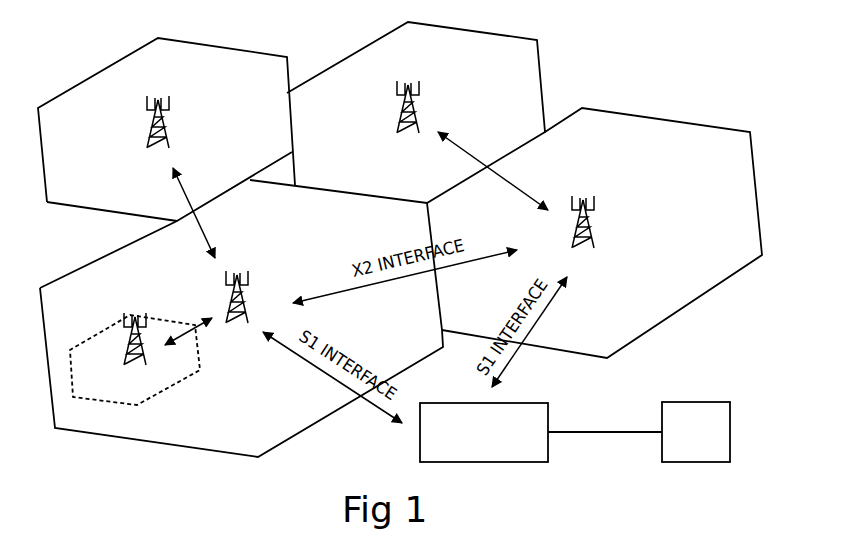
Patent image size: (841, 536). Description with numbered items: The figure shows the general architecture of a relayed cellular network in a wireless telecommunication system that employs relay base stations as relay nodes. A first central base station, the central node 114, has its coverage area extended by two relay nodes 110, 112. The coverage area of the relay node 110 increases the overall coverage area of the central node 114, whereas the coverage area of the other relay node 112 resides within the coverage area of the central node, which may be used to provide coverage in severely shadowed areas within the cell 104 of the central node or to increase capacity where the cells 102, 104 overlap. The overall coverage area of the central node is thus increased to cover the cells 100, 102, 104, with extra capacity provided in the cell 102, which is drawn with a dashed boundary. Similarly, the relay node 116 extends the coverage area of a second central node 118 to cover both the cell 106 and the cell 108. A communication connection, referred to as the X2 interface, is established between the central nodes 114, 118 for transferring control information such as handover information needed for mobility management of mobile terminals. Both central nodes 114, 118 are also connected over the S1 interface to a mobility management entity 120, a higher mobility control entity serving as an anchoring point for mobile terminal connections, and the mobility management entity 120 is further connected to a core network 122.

The cell 100 is at (118, 197).
The cell 102 is at (110, 390).
The cell 104 is at (231, 417).
The cell 106 is at (366, 180).
The cell 108 is at (618, 322).
The relay node 110 is at (166, 120).
The relay node 112 is at (149, 340).
The central node 114 is at (250, 295).
The relay node 116 is at (420, 105).
The central node 118 is at (597, 220).
The mobility management entity 120 is at (548, 420).
The core network 122 is at (702, 402).